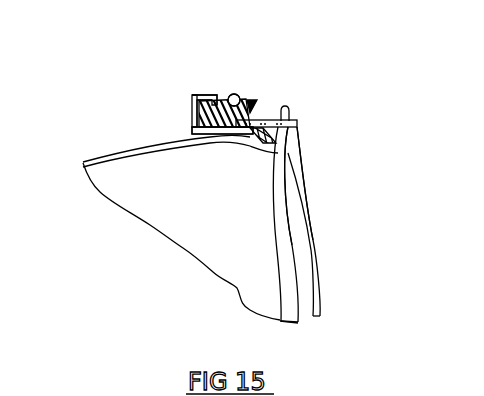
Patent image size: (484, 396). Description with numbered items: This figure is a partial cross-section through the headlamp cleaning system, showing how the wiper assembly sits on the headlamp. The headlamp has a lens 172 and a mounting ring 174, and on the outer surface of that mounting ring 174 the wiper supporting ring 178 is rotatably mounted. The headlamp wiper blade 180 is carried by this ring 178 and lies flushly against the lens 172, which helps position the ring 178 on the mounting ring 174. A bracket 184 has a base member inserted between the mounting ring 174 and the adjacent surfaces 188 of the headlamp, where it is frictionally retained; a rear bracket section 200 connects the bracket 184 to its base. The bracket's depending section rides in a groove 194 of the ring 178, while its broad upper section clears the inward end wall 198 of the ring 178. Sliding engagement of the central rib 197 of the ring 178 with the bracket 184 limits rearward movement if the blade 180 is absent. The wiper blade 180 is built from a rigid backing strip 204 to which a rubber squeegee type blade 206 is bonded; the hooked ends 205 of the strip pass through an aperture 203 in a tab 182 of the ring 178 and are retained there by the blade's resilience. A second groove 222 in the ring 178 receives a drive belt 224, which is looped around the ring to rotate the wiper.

The lens 172 is at (290, 311).
The mounting ring 174 is at (200, 149).
The wiper supporting ring 178 is at (192, 109).
The headlamp wiper blade 180 is at (305, 278).
The tab 182 is at (271, 113).
The bracket 184 is at (197, 95).
The adjacent surfaces of the headlamp 188 is at (120, 156).
The groove 194 is at (207, 95).
The central rib 197 is at (221, 94).
The inward end wall 198 is at (193, 92).
The rear bracket section 200 is at (192, 127).
The aperture 203 is at (272, 151).
The backing strip 204 is at (298, 148).
The hooked end 205 is at (293, 93).
The squeegee type blade 206 is at (311, 254).
The second groove 222 is at (252, 100).
The drive belt 224 is at (234, 93).